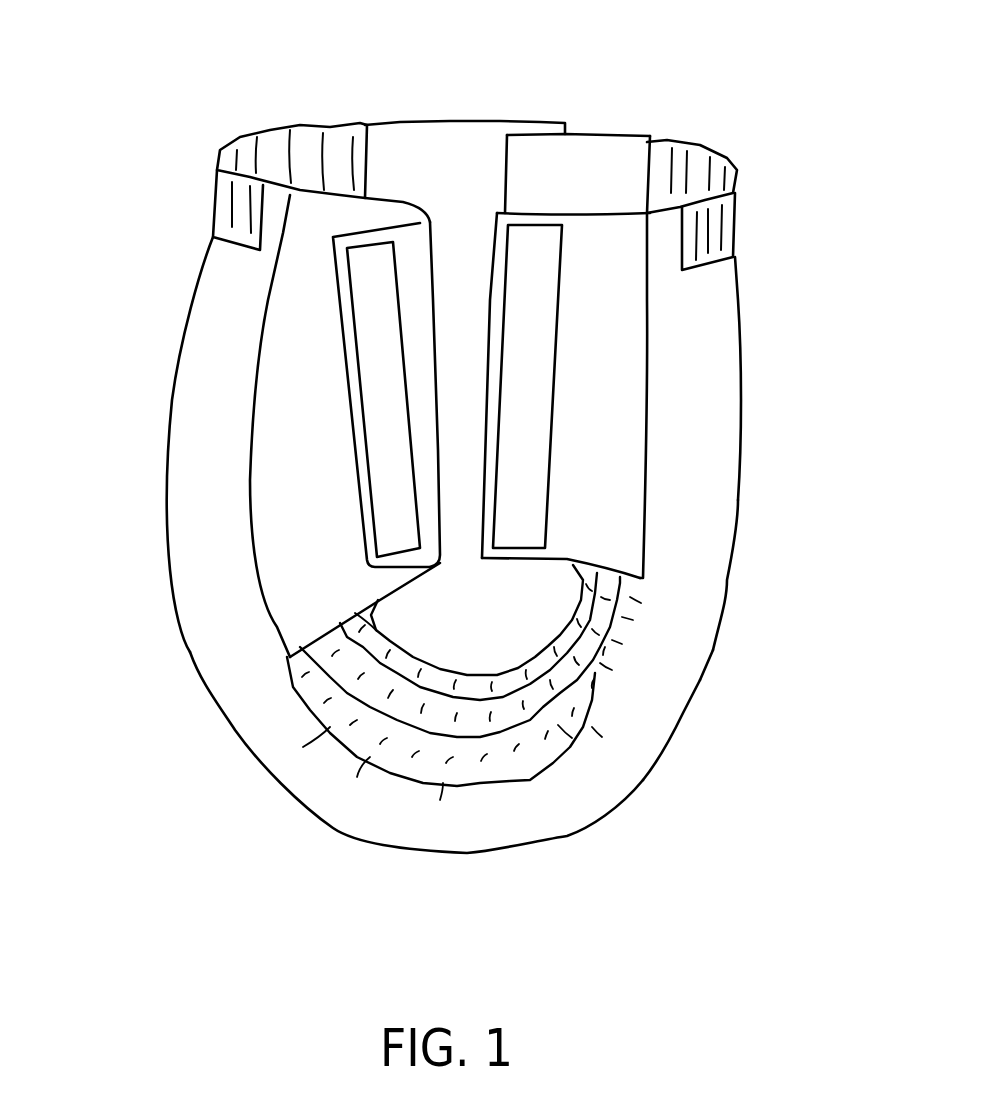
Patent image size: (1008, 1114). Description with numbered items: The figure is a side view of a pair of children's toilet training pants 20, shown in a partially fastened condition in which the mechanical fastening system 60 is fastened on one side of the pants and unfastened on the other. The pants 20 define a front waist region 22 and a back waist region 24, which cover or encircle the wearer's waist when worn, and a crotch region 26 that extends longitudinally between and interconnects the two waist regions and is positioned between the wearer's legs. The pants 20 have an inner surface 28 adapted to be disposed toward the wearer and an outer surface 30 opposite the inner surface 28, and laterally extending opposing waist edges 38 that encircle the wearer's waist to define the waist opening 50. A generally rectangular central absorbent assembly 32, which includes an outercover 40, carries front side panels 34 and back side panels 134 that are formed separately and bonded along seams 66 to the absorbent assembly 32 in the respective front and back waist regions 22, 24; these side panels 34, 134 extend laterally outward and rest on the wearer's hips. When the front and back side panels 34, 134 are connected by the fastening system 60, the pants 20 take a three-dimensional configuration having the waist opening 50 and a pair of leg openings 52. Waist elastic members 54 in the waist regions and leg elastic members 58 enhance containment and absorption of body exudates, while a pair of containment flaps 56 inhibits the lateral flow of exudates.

The training pants 20 is at (225, 76).
The front waist region 22 is at (794, 414).
The back waist region 24 is at (131, 497).
The crotch region 26 is at (479, 887).
The inner surface 28 is at (467, 178).
The outer surface 30 is at (703, 577).
The absorbent assembly 32 is at (670, 694).
The front side panels 34 is at (614, 443).
The waist edges 38 is at (697, 142).
The outercover 40 is at (688, 653).
The waist opening 50 is at (497, 118).
The leg openings 52 is at (452, 524).
The waist elastic members 54 is at (213, 201).
The containment flaps 56 is at (552, 692).
The leg elastic members 58 is at (536, 751).
The fastening system 60 is at (381, 403).
The seams 66 is at (649, 499).
The back side panels 134 is at (293, 468).